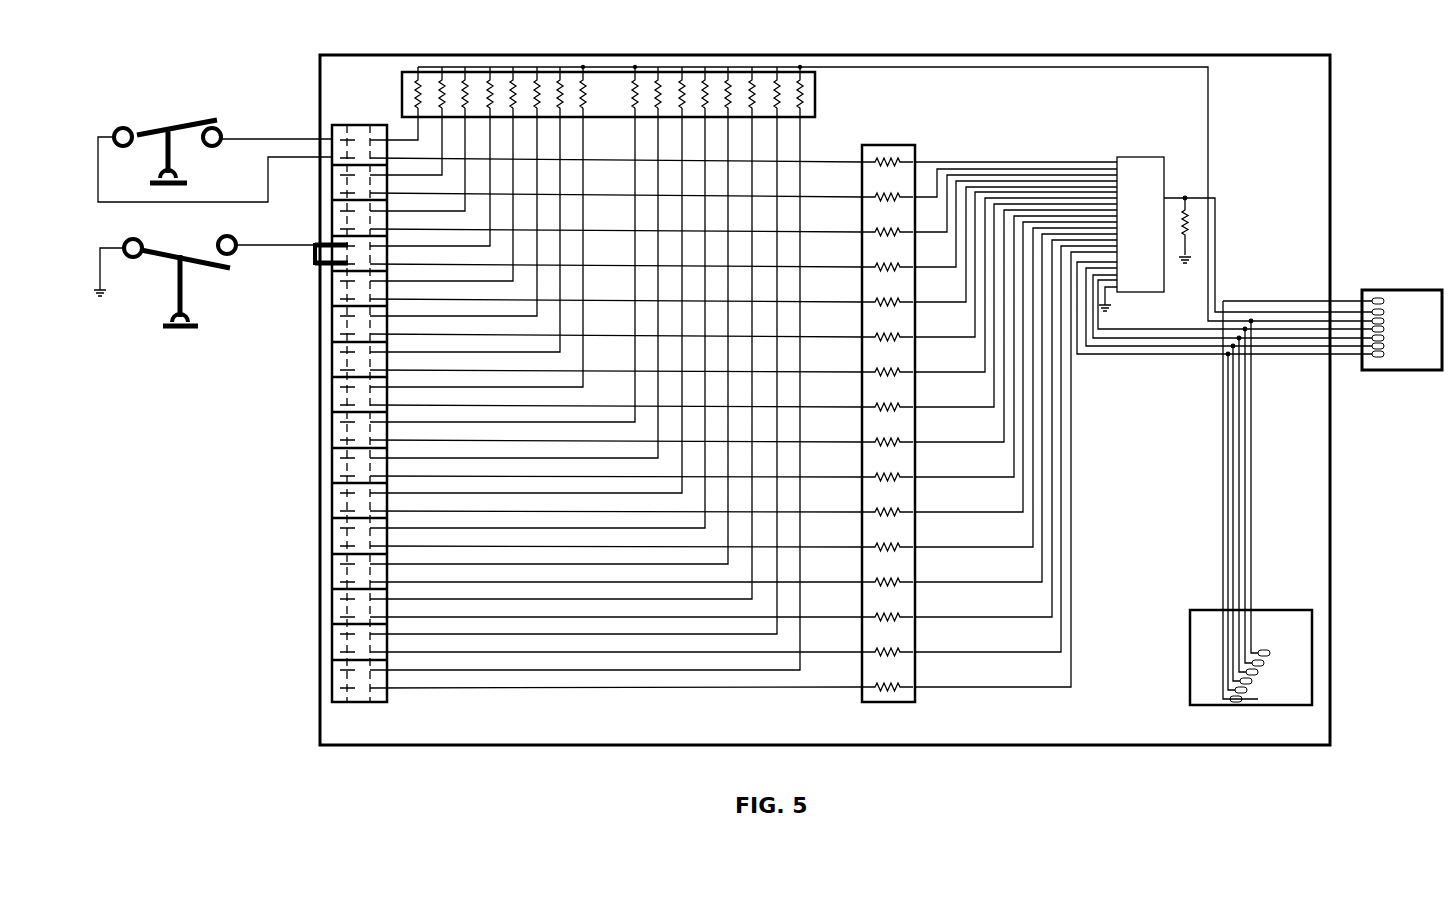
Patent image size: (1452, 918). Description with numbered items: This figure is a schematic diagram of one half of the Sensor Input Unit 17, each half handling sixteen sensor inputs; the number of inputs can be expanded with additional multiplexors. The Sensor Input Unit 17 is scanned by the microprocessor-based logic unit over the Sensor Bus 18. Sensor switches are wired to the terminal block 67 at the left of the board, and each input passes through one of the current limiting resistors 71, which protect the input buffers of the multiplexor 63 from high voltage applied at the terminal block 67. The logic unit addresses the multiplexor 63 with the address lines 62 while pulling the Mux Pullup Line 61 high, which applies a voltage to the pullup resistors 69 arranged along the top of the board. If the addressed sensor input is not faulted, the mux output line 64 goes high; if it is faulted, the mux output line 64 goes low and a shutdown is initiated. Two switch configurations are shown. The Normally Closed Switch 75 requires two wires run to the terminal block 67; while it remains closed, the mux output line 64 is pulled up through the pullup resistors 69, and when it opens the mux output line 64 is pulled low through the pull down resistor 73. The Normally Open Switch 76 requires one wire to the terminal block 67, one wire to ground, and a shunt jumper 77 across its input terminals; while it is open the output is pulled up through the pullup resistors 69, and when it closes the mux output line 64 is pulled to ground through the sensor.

The Sensor Input Unit 17 is at (1226, 56).
The Sensor Bus 18 is at (1382, 372).
The Mux Pullup Line 61 is at (1208, 148).
The address lines 62 is at (1145, 342).
The multiplexor 63 is at (1143, 158).
The mux output line 64 is at (1218, 231).
The terminal block 67 is at (370, 122).
The pullup resistors 69 is at (817, 90).
The current limiting resistors 71 is at (908, 145).
The pull down resistor 73 is at (1186, 224).
The Normally Closed Switch 75 is at (148, 132).
The Normally Open Switch 76 is at (158, 258).
The shunt jumper 77 is at (312, 265).